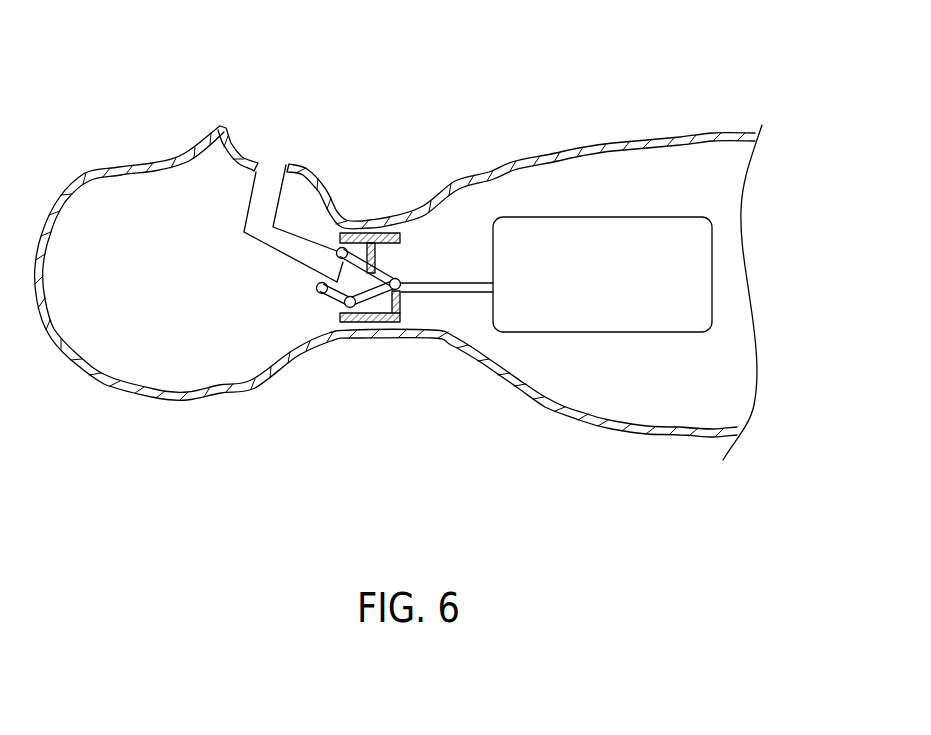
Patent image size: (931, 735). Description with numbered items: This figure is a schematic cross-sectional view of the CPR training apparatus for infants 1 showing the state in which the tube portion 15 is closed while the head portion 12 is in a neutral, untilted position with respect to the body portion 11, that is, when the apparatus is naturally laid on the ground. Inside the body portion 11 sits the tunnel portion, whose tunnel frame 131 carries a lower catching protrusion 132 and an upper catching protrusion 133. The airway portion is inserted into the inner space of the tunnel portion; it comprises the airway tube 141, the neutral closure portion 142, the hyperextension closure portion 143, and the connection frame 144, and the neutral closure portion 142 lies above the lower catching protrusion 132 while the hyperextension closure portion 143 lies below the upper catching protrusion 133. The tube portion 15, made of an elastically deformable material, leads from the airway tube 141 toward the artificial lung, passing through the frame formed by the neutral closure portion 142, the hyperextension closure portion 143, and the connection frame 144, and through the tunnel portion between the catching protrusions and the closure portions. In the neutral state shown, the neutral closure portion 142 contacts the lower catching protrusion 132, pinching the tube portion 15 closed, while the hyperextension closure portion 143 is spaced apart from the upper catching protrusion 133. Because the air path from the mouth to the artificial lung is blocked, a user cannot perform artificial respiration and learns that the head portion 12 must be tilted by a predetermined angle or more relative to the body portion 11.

The CPR training apparatus for infants 1 is at (749, 48).
The body portion 11 is at (632, 147).
The head portion 12 is at (98, 163).
The tunnel frame 131 is at (350, 233).
The lower catching protrusion 132 is at (404, 297).
The upper catching protrusion 133 is at (383, 233).
The airway tube 141 is at (287, 257).
The neutral closure portion 142 is at (400, 277).
The hyperextension closure portion 143 is at (352, 308).
The connection frame 144 is at (399, 279).
The tube portion 15 is at (462, 293).